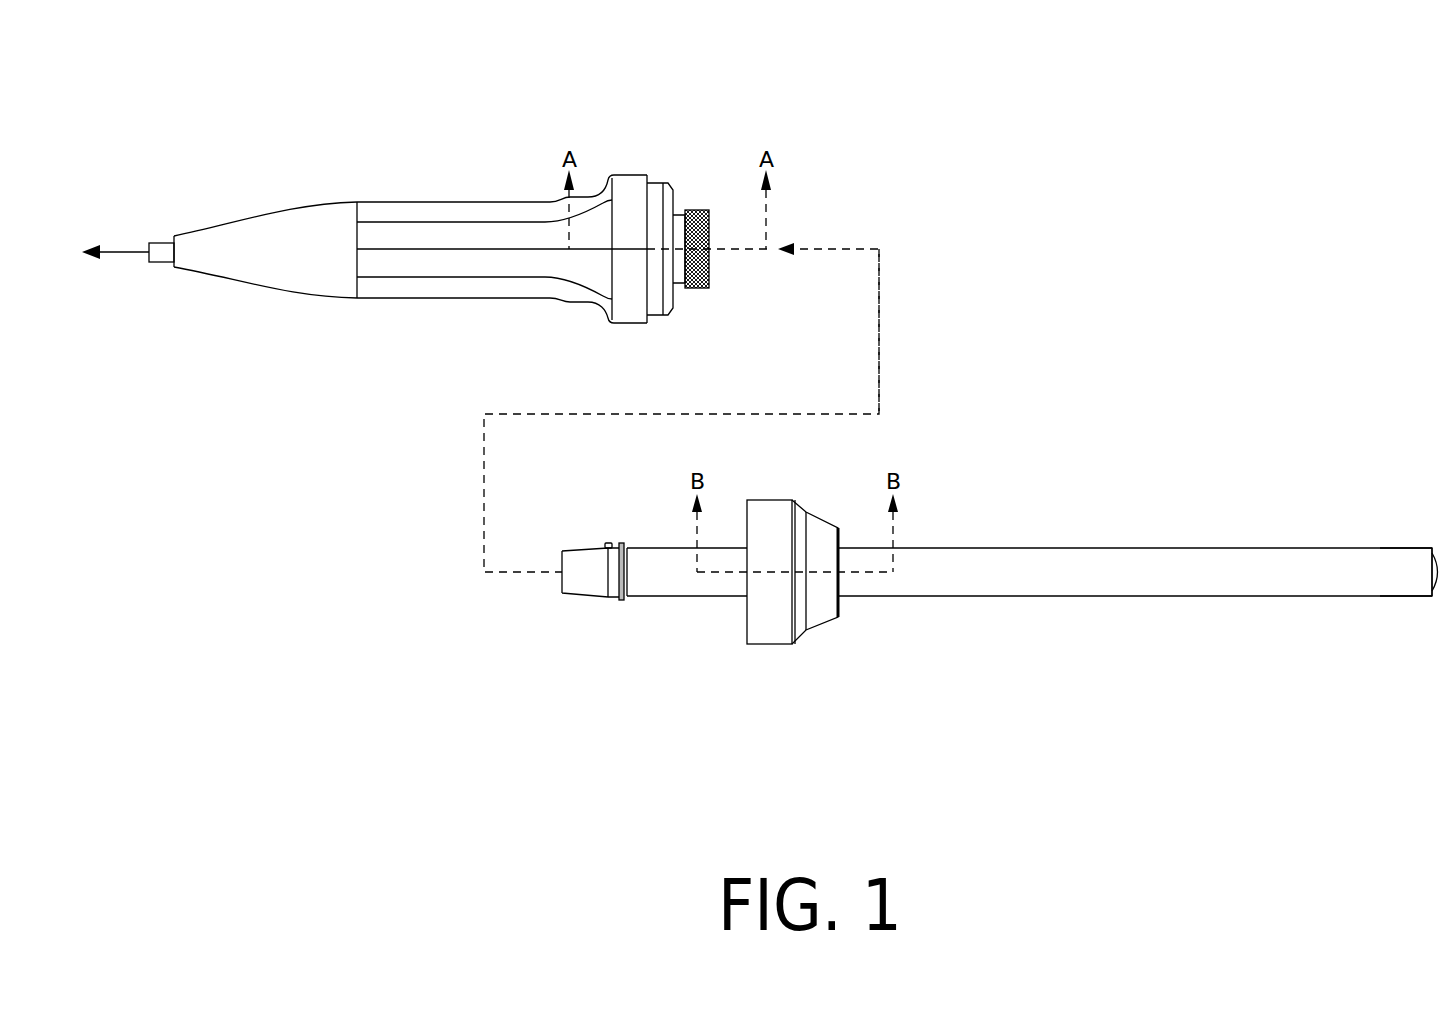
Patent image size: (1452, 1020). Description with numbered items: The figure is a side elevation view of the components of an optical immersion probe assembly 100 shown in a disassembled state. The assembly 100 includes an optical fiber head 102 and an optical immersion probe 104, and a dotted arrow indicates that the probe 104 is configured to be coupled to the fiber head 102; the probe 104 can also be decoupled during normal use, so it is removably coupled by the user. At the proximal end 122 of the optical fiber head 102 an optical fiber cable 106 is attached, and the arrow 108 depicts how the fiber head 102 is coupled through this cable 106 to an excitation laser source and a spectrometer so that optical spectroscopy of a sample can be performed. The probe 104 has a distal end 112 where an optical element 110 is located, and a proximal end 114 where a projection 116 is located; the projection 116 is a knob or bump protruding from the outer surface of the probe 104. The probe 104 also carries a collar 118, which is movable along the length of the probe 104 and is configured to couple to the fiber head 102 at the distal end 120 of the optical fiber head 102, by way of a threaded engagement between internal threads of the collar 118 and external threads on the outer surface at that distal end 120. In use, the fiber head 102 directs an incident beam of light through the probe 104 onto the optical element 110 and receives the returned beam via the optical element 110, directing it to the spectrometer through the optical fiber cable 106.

The optical immersion probe assembly 100 is at (1212, 145).
The optical fiber head 102 is at (635, 170).
The optical immersion probe 104 is at (1078, 540).
The optical fiber cable 106 is at (160, 262).
The arrow 108 is at (383, 487).
The optical element 110 is at (1434, 592).
The distal end of the probe 112 is at (1428, 538).
The proximal end of the probe 114 is at (587, 617).
The projection 116 is at (611, 543).
The collar 118 is at (795, 645).
The distal end of the optical fiber head 120 is at (707, 168).
The proximal end of the optical fiber head 122 is at (175, 200).